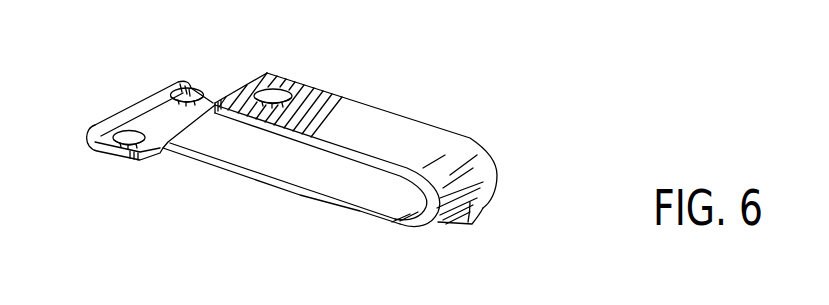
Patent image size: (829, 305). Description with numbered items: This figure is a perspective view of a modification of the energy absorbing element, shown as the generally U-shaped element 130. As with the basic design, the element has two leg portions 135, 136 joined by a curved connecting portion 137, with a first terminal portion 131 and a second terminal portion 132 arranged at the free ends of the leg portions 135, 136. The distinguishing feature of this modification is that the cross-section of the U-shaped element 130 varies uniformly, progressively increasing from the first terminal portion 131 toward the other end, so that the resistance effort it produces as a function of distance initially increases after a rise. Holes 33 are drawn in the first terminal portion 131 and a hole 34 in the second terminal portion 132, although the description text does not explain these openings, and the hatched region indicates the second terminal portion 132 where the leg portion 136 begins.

The U-shaped element 130 is at (405, 107).
The first terminal portion 131 is at (145, 107).
The second terminal portion 132 is at (237, 88).
The holes 33 is at (178, 86).
The hole 34 is at (278, 84).
The leg portion 135 is at (353, 182).
The leg portion 136 is at (423, 130).
The curved connecting portion 137 is at (460, 187).